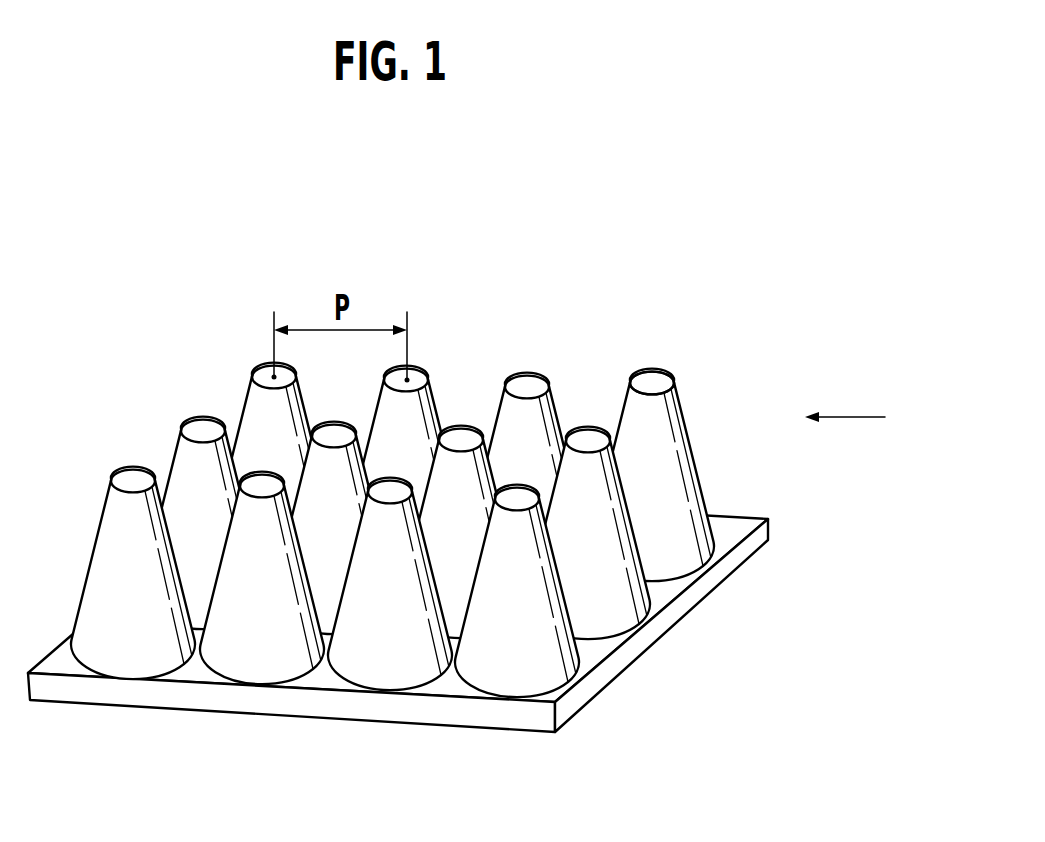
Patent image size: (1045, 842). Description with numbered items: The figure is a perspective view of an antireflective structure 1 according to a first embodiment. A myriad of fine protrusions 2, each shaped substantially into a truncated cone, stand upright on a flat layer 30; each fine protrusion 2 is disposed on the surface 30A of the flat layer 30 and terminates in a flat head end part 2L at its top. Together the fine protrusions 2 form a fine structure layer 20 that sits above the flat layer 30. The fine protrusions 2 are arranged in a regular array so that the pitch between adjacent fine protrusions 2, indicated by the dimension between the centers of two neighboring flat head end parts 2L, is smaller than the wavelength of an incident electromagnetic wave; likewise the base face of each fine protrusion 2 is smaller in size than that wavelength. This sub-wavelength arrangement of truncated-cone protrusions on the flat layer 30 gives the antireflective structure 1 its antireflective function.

The antireflective structure 1 is at (407, 503).
The fine protrusion 2 is at (92, 528).
The flat head end part 2L is at (652, 383).
The fine structure layer 20 is at (870, 412).
The flat layer 30 is at (408, 618).
The surface 30A is at (593, 650).